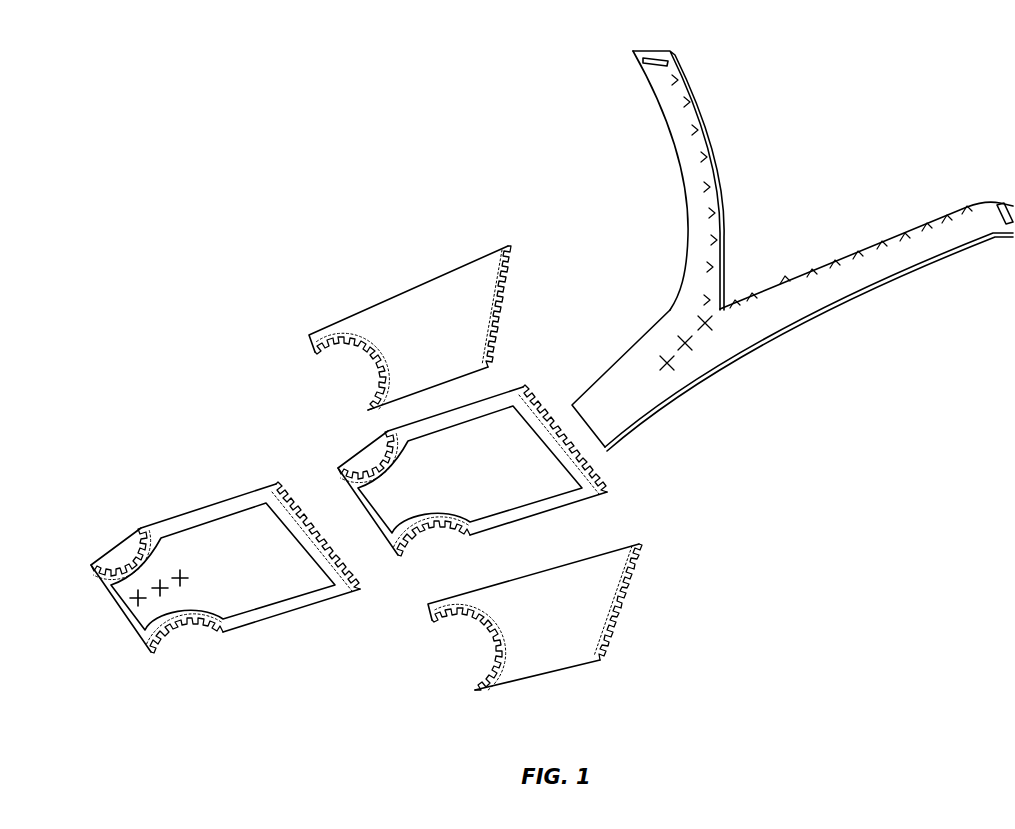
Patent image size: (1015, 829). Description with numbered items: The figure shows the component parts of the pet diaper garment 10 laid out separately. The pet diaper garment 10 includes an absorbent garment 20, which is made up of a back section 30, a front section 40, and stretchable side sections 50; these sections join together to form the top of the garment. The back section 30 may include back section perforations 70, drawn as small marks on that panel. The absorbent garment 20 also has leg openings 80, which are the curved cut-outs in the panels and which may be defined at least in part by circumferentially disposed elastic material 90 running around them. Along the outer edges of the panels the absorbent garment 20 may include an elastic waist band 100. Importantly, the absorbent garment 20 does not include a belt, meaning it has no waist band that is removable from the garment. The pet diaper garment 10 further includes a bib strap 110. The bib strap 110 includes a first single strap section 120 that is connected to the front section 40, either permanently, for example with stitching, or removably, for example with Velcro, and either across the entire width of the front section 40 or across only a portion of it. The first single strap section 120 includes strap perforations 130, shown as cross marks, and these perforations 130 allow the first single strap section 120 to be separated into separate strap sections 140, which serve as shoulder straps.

The pet diaper garment 10 is at (365, 183).
The absorbent garment 20 is at (363, 633).
The back section 30 is at (227, 525).
The front section 40 is at (572, 512).
The stretchable side sections 50 is at (405, 282).
The back section perforations 70 is at (135, 598).
The leg openings 80 is at (368, 390).
The elastic material 90 is at (358, 372).
The elastic waist band 100 is at (517, 297).
The bib strap 110 is at (862, 340).
The first single strap section 120 is at (602, 418).
The strap perforations 130 is at (687, 347).
The separate strap sections 140 is at (680, 120).